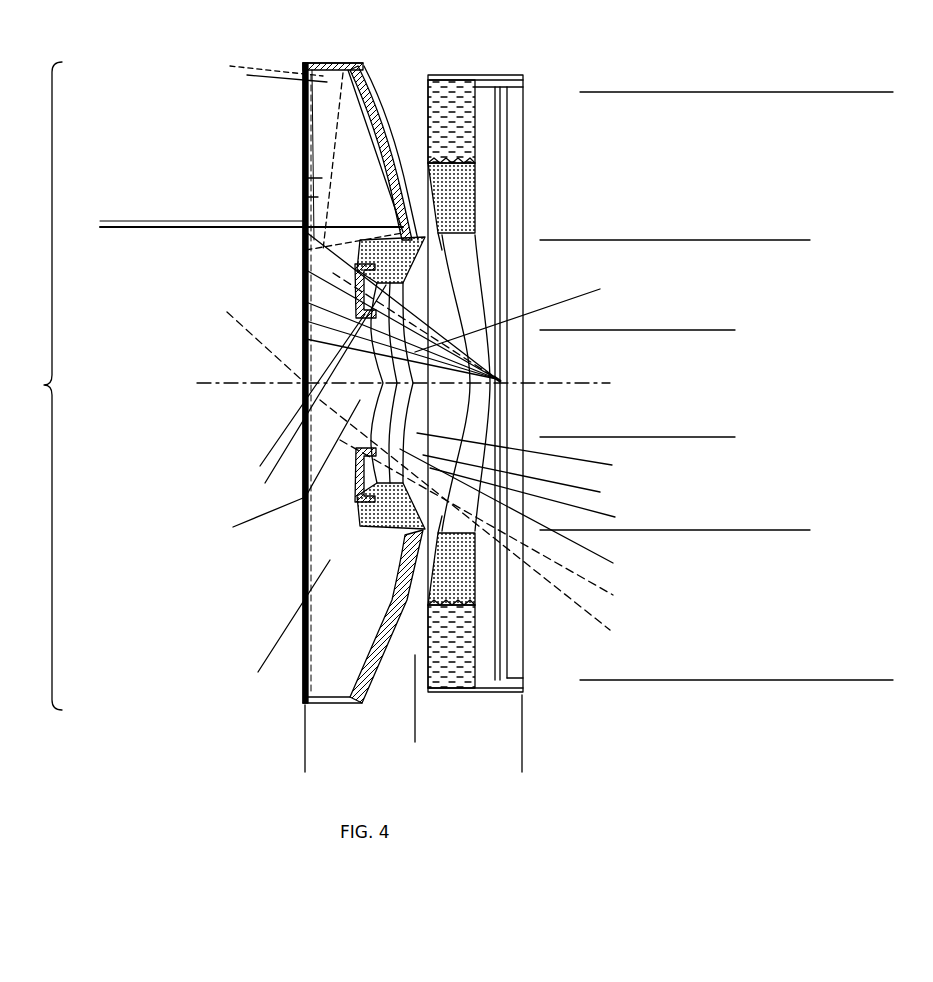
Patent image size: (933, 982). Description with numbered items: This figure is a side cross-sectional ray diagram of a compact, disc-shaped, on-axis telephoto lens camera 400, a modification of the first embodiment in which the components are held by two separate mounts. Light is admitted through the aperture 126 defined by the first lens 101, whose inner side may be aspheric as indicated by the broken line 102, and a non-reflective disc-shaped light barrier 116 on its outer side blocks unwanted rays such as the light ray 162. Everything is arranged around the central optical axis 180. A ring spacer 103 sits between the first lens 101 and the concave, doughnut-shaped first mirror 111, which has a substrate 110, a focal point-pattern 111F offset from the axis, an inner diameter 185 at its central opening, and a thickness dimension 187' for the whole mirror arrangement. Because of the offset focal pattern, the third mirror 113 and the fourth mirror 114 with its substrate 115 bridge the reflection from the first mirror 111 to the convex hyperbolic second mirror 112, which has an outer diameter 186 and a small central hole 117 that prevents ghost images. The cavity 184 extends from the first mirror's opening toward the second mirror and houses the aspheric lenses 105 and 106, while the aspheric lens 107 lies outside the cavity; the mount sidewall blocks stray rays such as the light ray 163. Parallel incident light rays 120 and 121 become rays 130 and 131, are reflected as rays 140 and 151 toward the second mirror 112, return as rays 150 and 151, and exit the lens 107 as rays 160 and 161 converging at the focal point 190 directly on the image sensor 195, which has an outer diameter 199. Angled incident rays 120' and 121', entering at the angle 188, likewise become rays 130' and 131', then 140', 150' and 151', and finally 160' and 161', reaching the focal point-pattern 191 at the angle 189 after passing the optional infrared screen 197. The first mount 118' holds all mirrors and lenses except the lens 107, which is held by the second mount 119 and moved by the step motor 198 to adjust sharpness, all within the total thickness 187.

The ring spacer 103 is at (333, 61).
The telephoto lens camera 400 is at (657, 74).
The incident light ray 120' is at (237, 149).
The incident light ray 120 is at (232, 87).
The light ray 130 is at (315, 151).
The light ray 130' is at (258, 155).
The aspheric surface 102 is at (261, 383).
The first lens 101 is at (248, 385).
The substrate 110 is at (325, 153).
The first mirror 111 is at (311, 427).
The light ray 140' is at (277, 193).
The light ray 140 is at (277, 210).
The angle 188 is at (202, 213).
The incident light ray 121' is at (271, 220).
The incident light ray 121 is at (251, 242).
The light ray 131 is at (366, 305).
The third mirror 113 is at (320, 260).
The light ray 131' is at (339, 324).
The focal point-pattern 111F is at (317, 321).
The substrate 115 is at (306, 291).
The fourth mirror 114 is at (374, 340).
The angle 189 is at (253, 347).
The aperture 126 is at (36, 386).
The optical axis 180 is at (366, 402).
The second mirror 112 is at (292, 383).
The hole 117 is at (307, 383).
The light ray 150 is at (283, 395).
The light ray 151 is at (300, 389).
The light ray 162 is at (209, 501).
The light barrier 116 is at (259, 479).
The light ray 150' is at (279, 530).
The light ray 151' is at (303, 565).
The light ray 163 is at (243, 626).
The step motor 198 is at (526, 384).
The second mount 119 is at (526, 366).
The first mount 118' is at (587, 383).
The infrared screen 197 is at (592, 383).
The image sensor 195 is at (546, 383).
The cavity 184 is at (538, 315).
The light ray 160 is at (565, 383).
The light ray 161 is at (506, 326).
The outer diameter 186 is at (727, 332).
The focal point 190 is at (589, 400).
The inner diameter 185 is at (798, 242).
The outer diameter 199 is at (880, 94).
The aspheric lens 105 is at (544, 454).
The aspheric lens 106 is at (542, 478).
The aspheric lens 107 is at (552, 497).
The light ray 160' is at (542, 511).
The light ray 161' is at (512, 522).
The focal point-pattern 191 is at (498, 520).
The mirror arrangement thickness 187' is at (360, 713).
The total thickness 187 is at (414, 734).